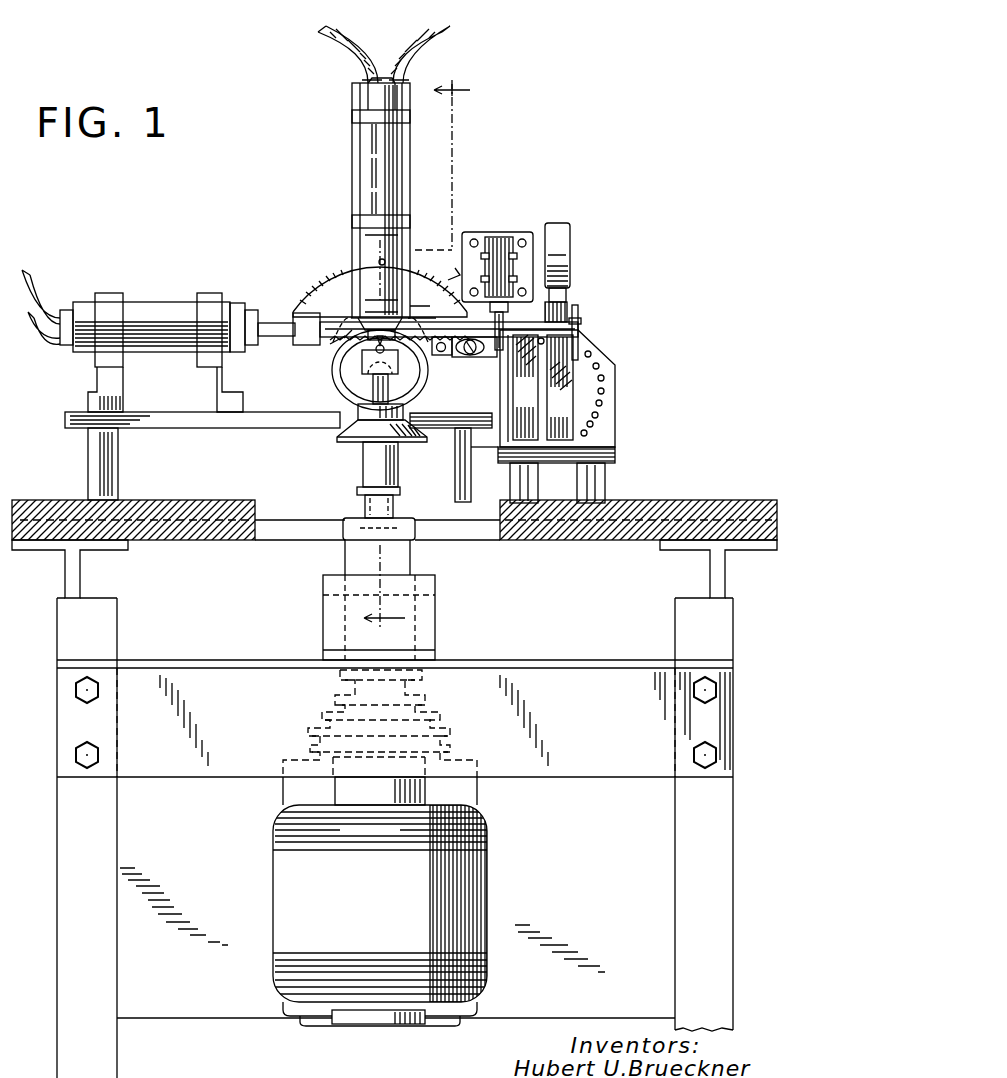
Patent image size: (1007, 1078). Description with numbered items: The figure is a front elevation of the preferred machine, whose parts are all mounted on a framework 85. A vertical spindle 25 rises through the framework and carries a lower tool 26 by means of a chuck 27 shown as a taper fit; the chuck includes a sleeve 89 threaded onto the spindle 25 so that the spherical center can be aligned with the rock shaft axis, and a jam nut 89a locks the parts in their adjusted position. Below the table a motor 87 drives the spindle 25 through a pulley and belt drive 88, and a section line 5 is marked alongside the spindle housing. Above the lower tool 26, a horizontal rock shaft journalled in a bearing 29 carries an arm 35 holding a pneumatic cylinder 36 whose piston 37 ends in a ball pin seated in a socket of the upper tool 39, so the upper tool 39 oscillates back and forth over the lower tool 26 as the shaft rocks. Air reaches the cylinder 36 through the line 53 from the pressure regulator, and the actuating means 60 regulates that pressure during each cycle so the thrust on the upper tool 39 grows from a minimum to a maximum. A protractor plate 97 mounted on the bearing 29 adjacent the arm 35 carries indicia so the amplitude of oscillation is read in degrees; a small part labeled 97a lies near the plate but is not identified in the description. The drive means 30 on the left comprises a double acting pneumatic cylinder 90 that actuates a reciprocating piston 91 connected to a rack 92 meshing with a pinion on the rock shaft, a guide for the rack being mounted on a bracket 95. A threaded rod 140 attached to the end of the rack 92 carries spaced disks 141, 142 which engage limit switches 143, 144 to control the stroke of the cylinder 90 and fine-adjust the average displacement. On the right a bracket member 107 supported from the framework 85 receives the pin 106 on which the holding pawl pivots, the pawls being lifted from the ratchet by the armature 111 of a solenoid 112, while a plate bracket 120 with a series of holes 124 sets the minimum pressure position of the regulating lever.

The section line 5- 5 is at (427, 362).
The vertical spindle 25 is at (364, 502).
The lower tool 26 is at (338, 378).
The chuck 27 is at (368, 452).
The bearing 29 is at (360, 410).
The drive means 30 is at (158, 318).
The arm 35 is at (352, 202).
The pneumatic cylinder 36 is at (362, 150).
The piston 37 is at (334, 364).
The upper tool 39 is at (375, 384).
The line 53 is at (440, 42).
The actuating means 60 is at (568, 398).
The framework 85 is at (676, 829).
The motor 87 is at (475, 878).
The pulley and belt drive 88 is at (318, 720).
The sleeve 89 is at (342, 435).
The jam nut 89a is at (356, 490).
The double acting pneumatic cylinder 90 is at (195, 352).
The reciprocating piston 91 is at (300, 322).
The rack 92 is at (345, 342).
The bracket 95 is at (282, 428).
The protractor plate 97 is at (332, 280).
The pointer 97a is at (444, 266).
The pin 106 is at (470, 358).
The bracket member 107 is at (470, 222).
The armature 111 is at (566, 312).
The solenoid 112 is at (508, 237).
The plate bracket 120 is at (616, 417).
The series of holes 124 is at (604, 400).
The threaded rod 140 is at (580, 326).
The disk 141 is at (428, 304).
The disk 142 is at (575, 316).
The limit switch 143 is at (520, 380).
The limit switch 144 is at (580, 374).